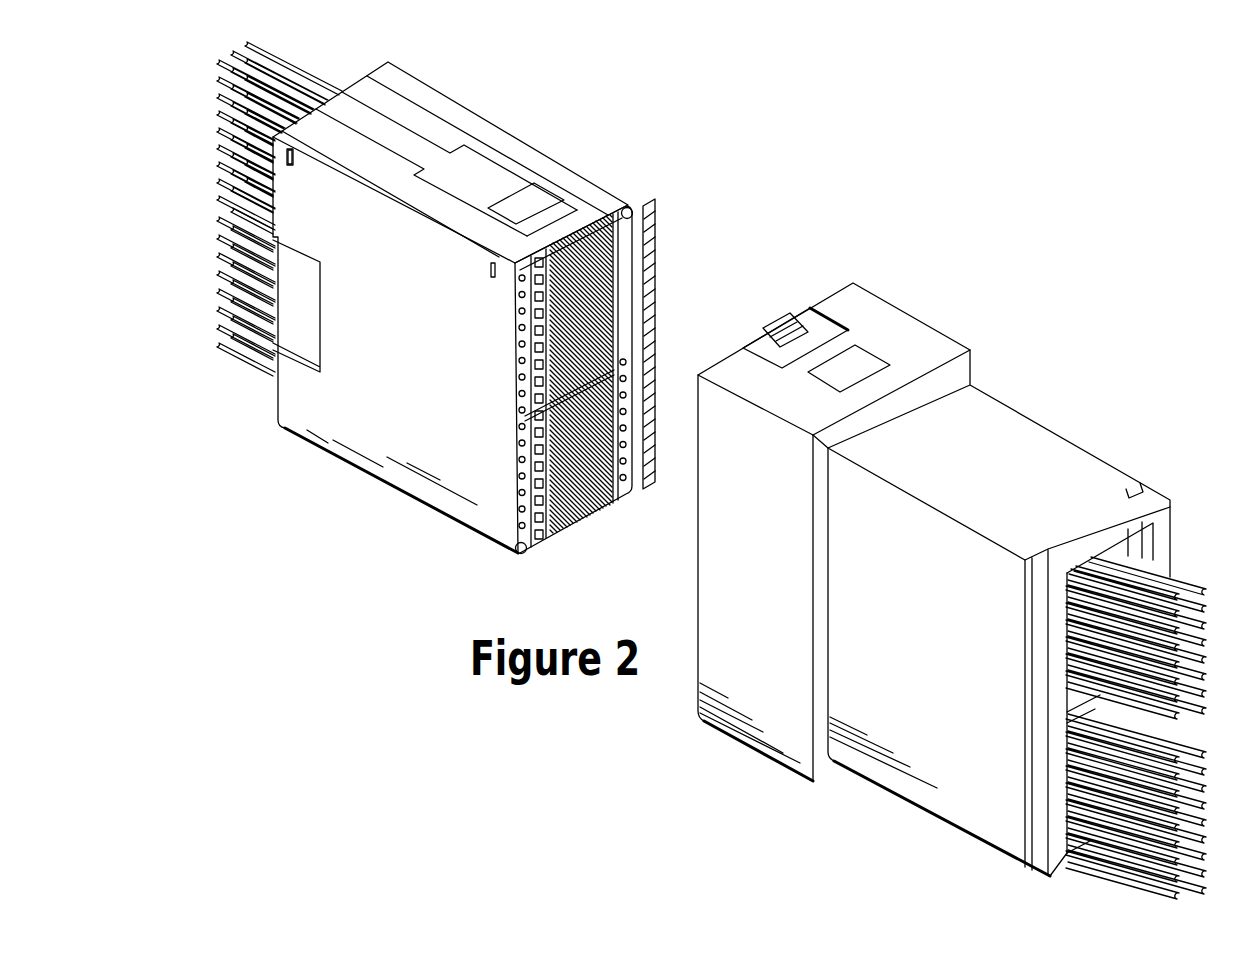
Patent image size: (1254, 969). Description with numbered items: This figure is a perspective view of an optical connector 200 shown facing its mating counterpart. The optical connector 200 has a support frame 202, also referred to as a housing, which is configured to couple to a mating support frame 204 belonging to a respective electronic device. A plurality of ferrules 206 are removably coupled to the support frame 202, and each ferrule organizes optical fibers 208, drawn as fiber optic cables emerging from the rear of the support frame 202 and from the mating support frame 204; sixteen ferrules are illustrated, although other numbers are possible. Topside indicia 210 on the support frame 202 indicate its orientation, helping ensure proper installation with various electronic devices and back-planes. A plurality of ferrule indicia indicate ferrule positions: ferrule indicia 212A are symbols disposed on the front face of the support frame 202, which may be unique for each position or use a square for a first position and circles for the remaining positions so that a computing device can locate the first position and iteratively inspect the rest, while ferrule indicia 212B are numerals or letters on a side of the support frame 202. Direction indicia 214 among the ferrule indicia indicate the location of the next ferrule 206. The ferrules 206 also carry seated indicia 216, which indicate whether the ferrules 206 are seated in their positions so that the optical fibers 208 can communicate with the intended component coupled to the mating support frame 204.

The optical connector 200 is at (852, 195).
The support frame 202 is at (501, 122).
The mating support frame 204 is at (921, 316).
The ferrules 206 is at (658, 215).
The optical fibers 208 is at (218, 92).
The topside indicia 210 is at (539, 195).
The ferrule indicia 212A is at (519, 306).
The ferrule indicia 212B is at (297, 166).
The direction indicia 214 is at (519, 417).
The seated indicia 216 is at (600, 538).